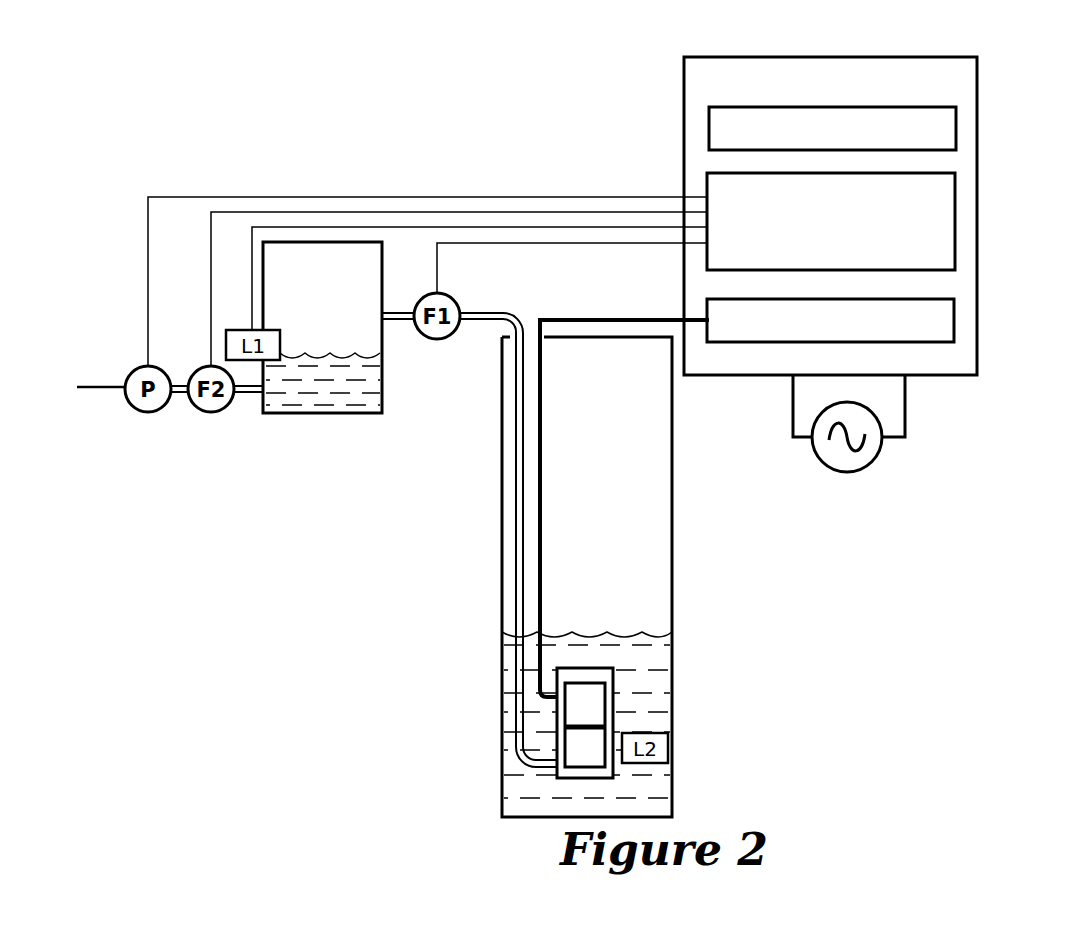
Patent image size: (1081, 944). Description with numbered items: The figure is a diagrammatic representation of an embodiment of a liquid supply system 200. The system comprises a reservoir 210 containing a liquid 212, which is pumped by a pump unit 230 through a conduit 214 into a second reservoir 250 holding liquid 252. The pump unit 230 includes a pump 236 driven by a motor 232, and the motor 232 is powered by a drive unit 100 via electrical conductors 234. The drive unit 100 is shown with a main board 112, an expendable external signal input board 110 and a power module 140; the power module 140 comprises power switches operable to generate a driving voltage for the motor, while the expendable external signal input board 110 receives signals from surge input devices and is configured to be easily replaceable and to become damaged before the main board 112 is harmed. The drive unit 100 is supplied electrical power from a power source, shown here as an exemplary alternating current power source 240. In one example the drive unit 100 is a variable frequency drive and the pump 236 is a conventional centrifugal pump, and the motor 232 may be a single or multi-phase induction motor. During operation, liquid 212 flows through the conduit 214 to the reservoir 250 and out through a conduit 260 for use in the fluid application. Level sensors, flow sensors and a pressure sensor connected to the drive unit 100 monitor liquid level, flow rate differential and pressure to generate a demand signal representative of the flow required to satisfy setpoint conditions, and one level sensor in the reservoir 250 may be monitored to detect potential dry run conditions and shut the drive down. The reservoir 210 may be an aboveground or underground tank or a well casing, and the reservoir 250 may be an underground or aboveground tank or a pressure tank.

The liquid supply system 200 is at (142, 69).
The drive unit 100 is at (977, 72).
The main board 112 is at (956, 129).
The expendable external signal input board 110 is at (955, 221).
The power module 140 is at (954, 319).
The alternating current power source 240 is at (871, 461).
The conduit 260 is at (102, 383).
The reservoir 250 is at (340, 413).
The liquid 252 is at (346, 352).
The reservoir 210 is at (502, 552).
The liquid 212 is at (606, 634).
The conduit 214 is at (518, 585).
The electrical conductors 234 is at (545, 548).
The pump unit 230 is at (615, 721).
The motor 232 is at (613, 691).
The pump 236 is at (577, 740).